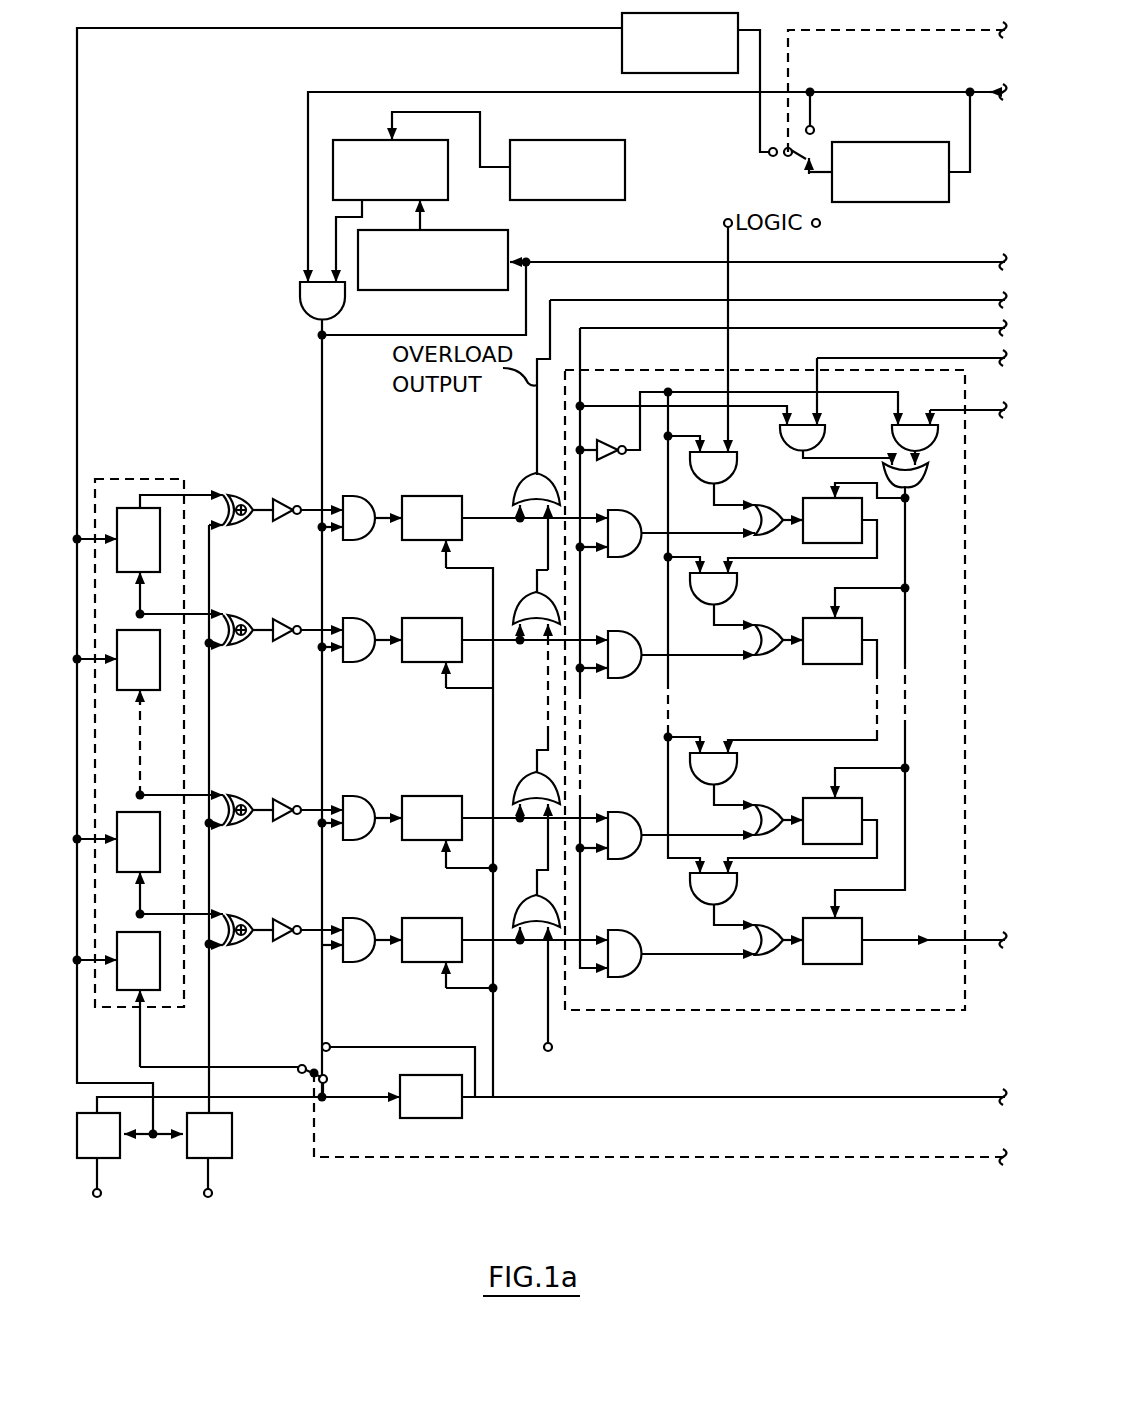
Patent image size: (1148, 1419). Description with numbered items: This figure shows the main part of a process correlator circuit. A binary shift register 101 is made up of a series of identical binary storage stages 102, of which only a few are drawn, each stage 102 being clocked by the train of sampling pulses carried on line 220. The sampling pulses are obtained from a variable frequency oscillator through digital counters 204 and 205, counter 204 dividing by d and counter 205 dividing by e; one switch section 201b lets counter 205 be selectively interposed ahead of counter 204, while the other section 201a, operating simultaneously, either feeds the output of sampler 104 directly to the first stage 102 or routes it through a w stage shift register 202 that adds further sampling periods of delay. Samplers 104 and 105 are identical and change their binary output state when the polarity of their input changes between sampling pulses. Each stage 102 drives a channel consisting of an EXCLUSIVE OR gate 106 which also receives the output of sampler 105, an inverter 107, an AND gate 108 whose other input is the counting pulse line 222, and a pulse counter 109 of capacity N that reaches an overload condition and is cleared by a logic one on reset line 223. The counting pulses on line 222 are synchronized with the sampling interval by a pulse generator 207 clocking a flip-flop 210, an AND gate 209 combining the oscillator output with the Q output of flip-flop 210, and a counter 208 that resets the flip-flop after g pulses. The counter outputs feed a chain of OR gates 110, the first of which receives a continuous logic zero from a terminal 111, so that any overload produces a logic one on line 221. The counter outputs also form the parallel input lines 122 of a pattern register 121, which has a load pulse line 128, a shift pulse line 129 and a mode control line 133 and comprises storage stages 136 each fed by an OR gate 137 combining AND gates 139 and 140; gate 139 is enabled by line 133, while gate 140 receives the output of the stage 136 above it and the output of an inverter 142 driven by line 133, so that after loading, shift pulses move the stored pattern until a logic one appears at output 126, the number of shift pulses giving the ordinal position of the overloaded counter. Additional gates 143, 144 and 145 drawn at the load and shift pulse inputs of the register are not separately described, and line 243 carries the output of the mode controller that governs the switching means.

The binary shift register 101 is at (176, 482).
The binary storage stage 102 is at (127, 574).
The sampler 104 is at (112, 1148).
The sampler 105 is at (225, 1148).
The EXCLUSIVE OR gate 106 is at (247, 480).
The inverter 107 is at (288, 498).
The AND gate 108 is at (365, 540).
The pulse counter 109 is at (445, 494).
The OR gate 110 is at (530, 476).
The terminal 111 is at (552, 1050).
The pattern register 121 is at (601, 370).
The parallel input lines 122 is at (594, 515).
The output 126 is at (900, 925).
The load pulse line 128 is at (817, 359).
The shift pulse line 129 is at (971, 416).
The mode control line 133 is at (600, 335).
The binary storage stage 136 is at (802, 512).
The OR gate 137 is at (776, 487).
The AND gate 139 is at (632, 560).
The AND gate 140 is at (714, 450).
The inverter 142 is at (610, 444).
The AND gate 143 is at (828, 432).
The AND gate 144 is at (920, 425).
The OR gate 145 is at (924, 470).
The switch section 201a is at (302, 1068).
The switch section 201b is at (772, 158).
The w stage shift register 202 is at (450, 1112).
The digital counter 204 is at (622, 38).
The digital counter 205 is at (860, 142).
The pulse generator 207 is at (570, 138).
The counter 208 is at (508, 242).
The AND gate 209 is at (301, 304).
The flip-flop 210 is at (336, 148).
The sampling pulse line 220 is at (78, 472).
The overload indication line 221 is at (600, 305).
The counting pulse line 222 is at (596, 265).
The reset line 223 is at (462, 568).
The line 243 is at (860, 32).